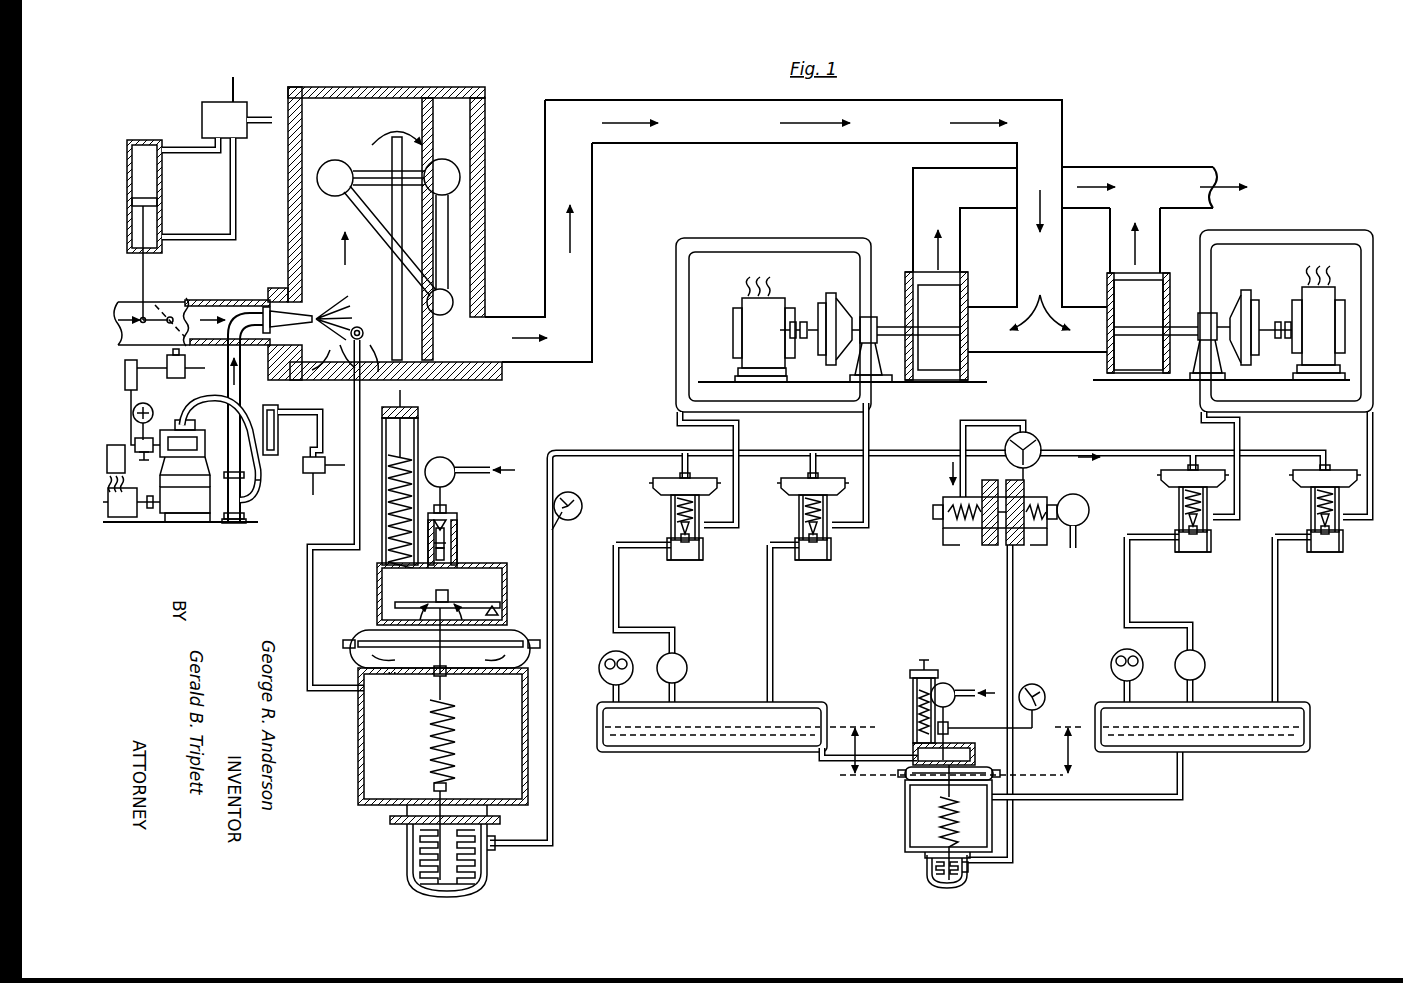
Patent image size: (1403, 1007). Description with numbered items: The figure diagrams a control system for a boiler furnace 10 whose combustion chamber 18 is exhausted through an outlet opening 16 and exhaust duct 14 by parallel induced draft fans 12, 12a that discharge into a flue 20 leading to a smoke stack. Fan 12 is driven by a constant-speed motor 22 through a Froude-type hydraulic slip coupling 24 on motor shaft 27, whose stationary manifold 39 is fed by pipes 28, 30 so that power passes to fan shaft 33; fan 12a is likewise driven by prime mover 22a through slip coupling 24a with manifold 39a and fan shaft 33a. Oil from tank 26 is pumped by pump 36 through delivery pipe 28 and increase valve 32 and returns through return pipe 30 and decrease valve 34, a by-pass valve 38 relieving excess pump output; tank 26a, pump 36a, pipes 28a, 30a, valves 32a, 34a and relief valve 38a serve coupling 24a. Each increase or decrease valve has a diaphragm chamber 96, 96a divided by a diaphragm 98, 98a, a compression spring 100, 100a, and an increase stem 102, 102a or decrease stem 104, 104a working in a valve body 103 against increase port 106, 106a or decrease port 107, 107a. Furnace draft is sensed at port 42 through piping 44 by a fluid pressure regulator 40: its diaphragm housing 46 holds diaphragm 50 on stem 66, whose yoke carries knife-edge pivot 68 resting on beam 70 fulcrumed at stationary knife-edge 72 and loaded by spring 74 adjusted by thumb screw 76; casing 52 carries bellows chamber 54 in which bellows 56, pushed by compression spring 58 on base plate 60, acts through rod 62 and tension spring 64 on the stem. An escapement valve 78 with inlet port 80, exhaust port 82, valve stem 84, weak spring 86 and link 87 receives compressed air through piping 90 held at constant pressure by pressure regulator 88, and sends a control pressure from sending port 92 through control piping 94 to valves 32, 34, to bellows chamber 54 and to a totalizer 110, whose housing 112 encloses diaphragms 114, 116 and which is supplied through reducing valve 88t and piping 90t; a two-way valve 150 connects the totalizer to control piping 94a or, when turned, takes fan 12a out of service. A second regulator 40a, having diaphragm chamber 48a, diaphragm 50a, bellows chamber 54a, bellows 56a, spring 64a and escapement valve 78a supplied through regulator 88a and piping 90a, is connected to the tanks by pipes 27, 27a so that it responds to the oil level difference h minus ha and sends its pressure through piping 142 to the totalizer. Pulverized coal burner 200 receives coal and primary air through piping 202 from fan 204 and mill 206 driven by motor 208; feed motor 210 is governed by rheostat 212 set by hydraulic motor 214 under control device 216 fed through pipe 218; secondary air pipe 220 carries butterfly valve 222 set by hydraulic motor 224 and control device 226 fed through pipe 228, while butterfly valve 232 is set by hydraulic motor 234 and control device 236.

The boiler furnace 10 is at (405, 95).
The induced draft fan 12 is at (965, 276).
The induced draft fan 12a is at (1105, 278).
The furnace exhaust duct 14 is at (766, 143).
The outlet opening 16 is at (488, 300).
The combustion chamber 18 is at (388, 229).
The flue 20 is at (1162, 167).
The prime mover 22 is at (755, 300).
The prime mover 22a is at (1310, 300).
The slip coupling 24 is at (834, 314).
The slip coupling 24a is at (1238, 311).
The oil tank 26 is at (645, 752).
The oil tank 26a is at (1178, 752).
The shaft 27 is at (803, 346).
The pipe 27a is at (1280, 340).
The delivery pipe 28 is at (676, 395).
The delivery pipe 28a is at (1235, 415).
The return pipe 30 is at (866, 428).
The return pipe 30a is at (1368, 418).
The increase valve 32 is at (699, 517).
The increase valve 32a is at (1171, 509).
The fan shaft 33 is at (888, 326).
The fan shaft 33a is at (1182, 326).
The decrease valve 34 is at (828, 517).
The decrease valve 34a is at (1307, 509).
The pump 36 is at (640, 660).
The pump 36a is at (1111, 665).
The by-pass valve 38 is at (686, 664).
The by-pass valve 38a is at (1205, 665).
The manifold 39 is at (872, 344).
The bearing 39a is at (1205, 342).
The fluid pressure regulator 40 is at (409, 763).
The diaphragm regulator 40a is at (913, 856).
The port 42 is at (360, 328).
The piping 44 is at (356, 528).
The diaphragm housing 46 is at (356, 640).
The diaphragm chamber 48a is at (980, 767).
The diaphragm 50 is at (360, 660).
The diaphragm 50a is at (915, 790).
The casing 52 is at (358, 752).
The bellows chamber 54 is at (408, 863).
The bellows chamber 54a is at (930, 878).
The bellows 56 is at (492, 858).
The bellows outlet 56a is at (968, 876).
The compression spring 58 is at (420, 848).
The base plate 60 is at (478, 892).
The rod 62 is at (448, 792).
The tension spring 64 is at (450, 722).
The spring 64a is at (960, 828).
The diaphragm stem 66 is at (462, 672).
The knife-edge pivot 68 is at (450, 596).
The beam 70 is at (506, 584).
The stationary knife-edge 72 is at (500, 612).
The loading spring 74 is at (410, 450).
The thumb screw 76 is at (418, 413).
The escapement valve 78 is at (455, 523).
The pilot valve 78a is at (953, 712).
The inlet port 80 is at (450, 515).
The discharge port 82 is at (455, 555).
The valve stem 84 is at (446, 538).
The weak spring 86 is at (475, 543).
The link 87 is at (435, 585).
The vacuum regulator gauge 88 is at (450, 460).
The vacuum regulator gauge 88a is at (950, 683).
The vacuum regulator gauge 88t is at (1078, 492).
The piping 90 is at (482, 468).
The vent pipe 90a is at (972, 692).
The vent pipe 90t is at (1076, 543).
The sending port 92 is at (452, 525).
The control piping 94 is at (622, 453).
The control piping 94a is at (1182, 453).
The diaphragm chamber 96 is at (660, 478).
The diaphragm housing 96a is at (1166, 470).
The diaphragm 98 is at (705, 479).
The diaphragm 98a is at (1330, 468).
The compression spring 100 is at (671, 505).
The spring 100a is at (1179, 498).
The increase valve stem 102 is at (671, 528).
The increase valve stem 102a is at (1210, 528).
The valve body 103 is at (704, 552).
The decrease valve stem 104 is at (831, 548).
The decrease valve stem 104a is at (1340, 554).
The increase port 106 is at (680, 562).
The increase port 106a is at (1196, 554).
The decrease port 107 is at (799, 530).
The decrease port 107a is at (1316, 555).
The totalizer 110 is at (982, 504).
The housing 112 is at (994, 480).
The diaphragm 114 is at (948, 535).
The diaphragm 116 is at (1030, 535).
The piping 142 is at (1013, 618).
The two-way valve 150 is at (1038, 442).
The pulverized coal burner 200 is at (283, 300).
The piping 202 is at (241, 383).
The fan 204 is at (234, 524).
The pulverizing mill 206 is at (188, 520).
The electric motor 208 is at (128, 520).
The electric motor 210 is at (135, 442).
The rheostat 212 is at (150, 407).
The hydraulic motor 214 is at (125, 372).
The control device 216 is at (185, 376).
The pipe 218 is at (205, 368).
The pipe 220 is at (165, 305).
The butterfly valve 222 is at (190, 300).
The hydraulic motor 224 is at (162, 212).
The control device 226 is at (202, 114).
The control stem 228 is at (258, 105).
The butterfly valve 232 is at (258, 505).
The hydraulic motor 234 is at (280, 405).
The control device 236 is at (304, 470).
The oil level height h is at (946, 751).
The oil level height ha is at (1064, 750).